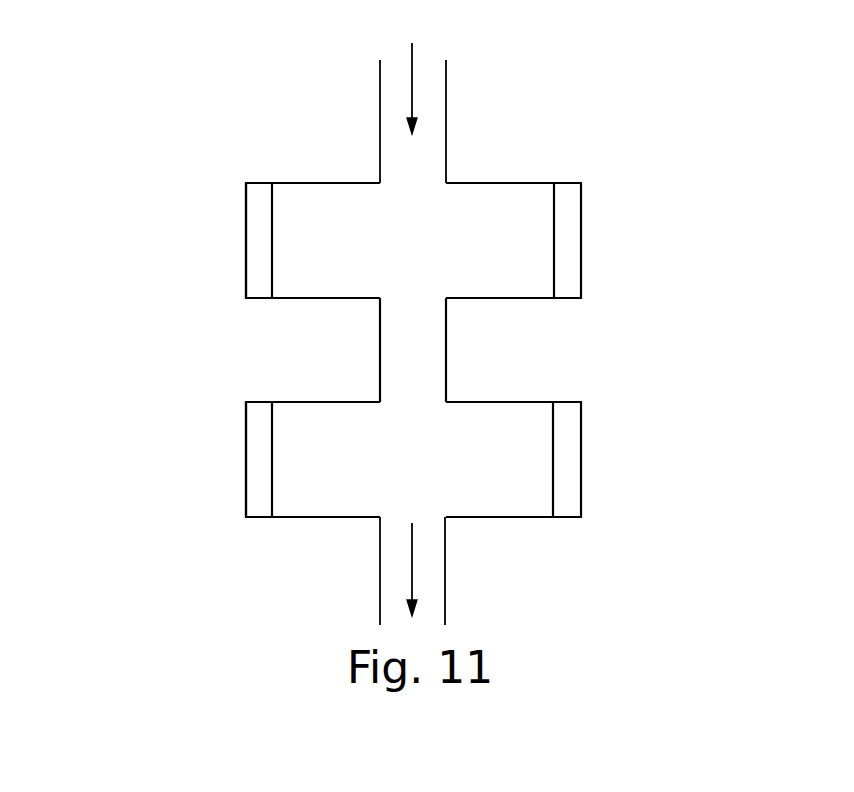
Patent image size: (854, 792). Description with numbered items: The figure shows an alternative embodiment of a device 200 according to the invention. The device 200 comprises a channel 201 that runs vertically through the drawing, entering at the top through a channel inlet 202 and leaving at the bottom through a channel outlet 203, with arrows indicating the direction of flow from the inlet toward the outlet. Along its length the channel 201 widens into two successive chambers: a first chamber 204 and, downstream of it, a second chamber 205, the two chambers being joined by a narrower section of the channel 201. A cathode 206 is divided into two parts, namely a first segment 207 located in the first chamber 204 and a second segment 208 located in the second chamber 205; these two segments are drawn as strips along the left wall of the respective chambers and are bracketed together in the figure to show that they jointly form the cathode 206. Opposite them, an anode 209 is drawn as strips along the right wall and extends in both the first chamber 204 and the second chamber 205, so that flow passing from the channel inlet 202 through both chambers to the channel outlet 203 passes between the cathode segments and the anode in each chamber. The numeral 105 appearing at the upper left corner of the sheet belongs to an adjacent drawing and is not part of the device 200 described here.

The component of adjacent figure 105 is at (6, 0).
The device 200 is at (648, 108).
The channel 201 is at (425, 345).
The channel inlet 202 is at (433, 112).
The channel outlet 203 is at (428, 578).
The first chamber 204 is at (437, 253).
The second chamber 205 is at (438, 473).
The cathode 206 is at (127, 230).
The first segment 207 is at (258, 232).
The second segment 208 is at (258, 465).
The anode 209 is at (568, 233).